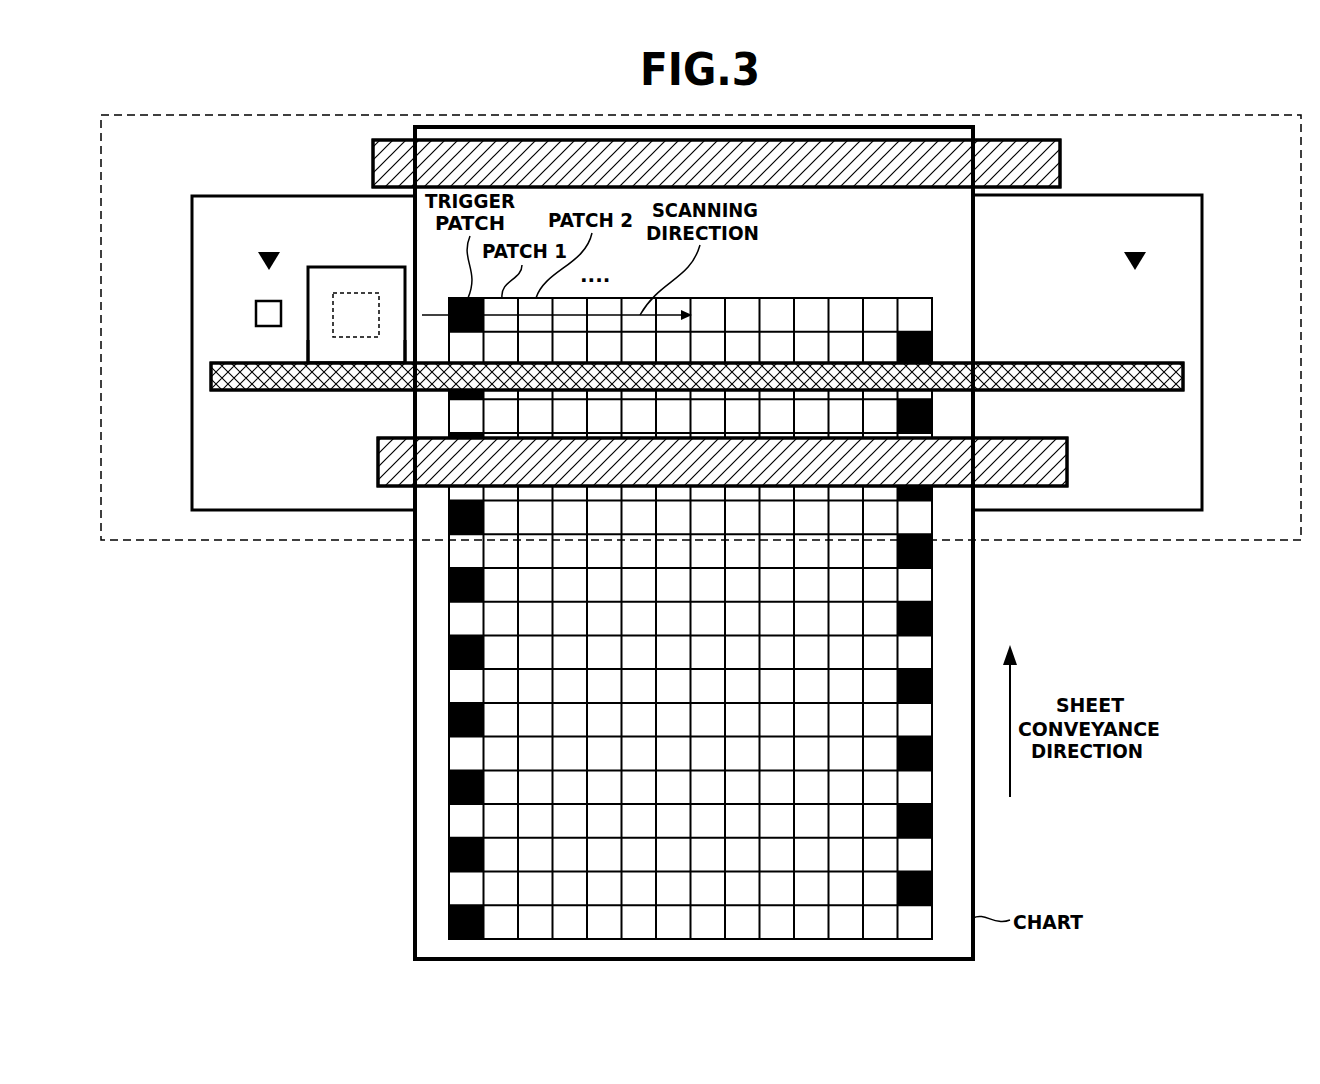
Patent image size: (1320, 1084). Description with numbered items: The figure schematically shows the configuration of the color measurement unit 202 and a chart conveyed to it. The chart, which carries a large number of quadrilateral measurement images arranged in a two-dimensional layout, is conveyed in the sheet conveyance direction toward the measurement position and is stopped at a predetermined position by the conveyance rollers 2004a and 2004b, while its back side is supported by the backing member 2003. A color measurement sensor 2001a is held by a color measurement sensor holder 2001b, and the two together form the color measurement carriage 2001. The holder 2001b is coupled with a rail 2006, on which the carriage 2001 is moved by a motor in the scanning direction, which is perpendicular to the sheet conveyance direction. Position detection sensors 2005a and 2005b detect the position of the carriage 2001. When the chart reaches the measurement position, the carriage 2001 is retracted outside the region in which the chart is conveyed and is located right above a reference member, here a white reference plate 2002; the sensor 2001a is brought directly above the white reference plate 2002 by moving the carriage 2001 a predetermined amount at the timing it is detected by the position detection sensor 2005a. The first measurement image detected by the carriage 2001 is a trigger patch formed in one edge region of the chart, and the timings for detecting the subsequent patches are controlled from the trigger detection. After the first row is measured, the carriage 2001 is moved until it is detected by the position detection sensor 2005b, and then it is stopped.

The color measurement unit 202 is at (166, 541).
The color measurement carriage 2001 is at (317, 267).
The color measurement sensor 2001a is at (358, 293).
The color measurement sensor holder 2001b is at (325, 352).
The white reference plate 2002 is at (256, 313).
The backing member 2003 is at (288, 510).
The conveyance roller 2004a is at (1025, 488).
The conveyance roller 2004b is at (1032, 140).
The position detection sensor 2005a is at (267, 252).
The position detection sensor 2005b is at (1135, 252).
The rail 2006 is at (1142, 391).